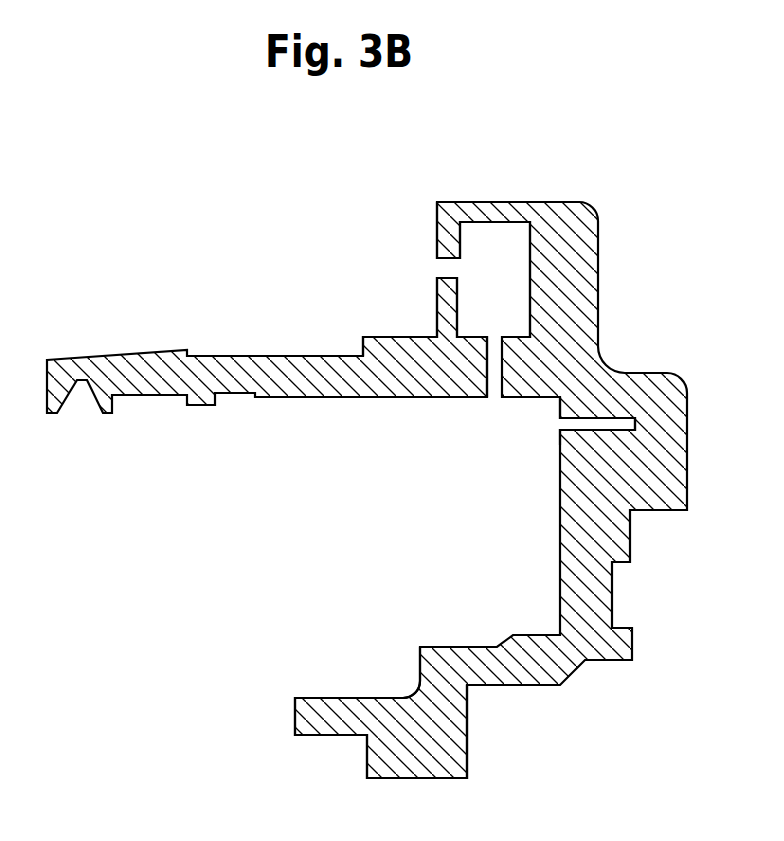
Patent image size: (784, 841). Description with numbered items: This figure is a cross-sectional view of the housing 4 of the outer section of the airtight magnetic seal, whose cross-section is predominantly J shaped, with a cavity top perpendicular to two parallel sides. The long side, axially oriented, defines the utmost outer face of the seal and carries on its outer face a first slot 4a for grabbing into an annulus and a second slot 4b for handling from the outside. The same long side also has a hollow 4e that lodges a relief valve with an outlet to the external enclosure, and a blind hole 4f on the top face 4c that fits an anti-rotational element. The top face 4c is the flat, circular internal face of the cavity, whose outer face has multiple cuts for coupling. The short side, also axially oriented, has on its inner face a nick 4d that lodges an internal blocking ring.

The housing 4 is at (722, 450).
The first slot 4a is at (195, 348).
The second slot 4b is at (370, 336).
The top face 4c is at (560, 510).
The nick 4d is at (408, 687).
The hollow 4e is at (487, 285).
The blind hole 4f is at (559, 427).